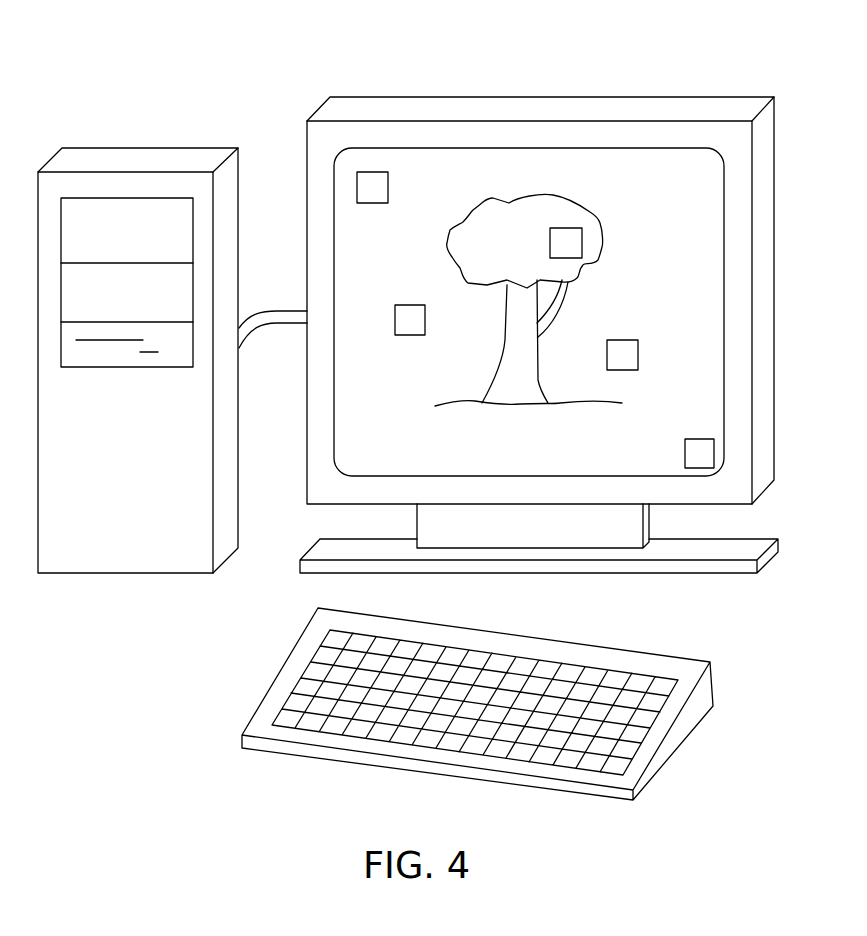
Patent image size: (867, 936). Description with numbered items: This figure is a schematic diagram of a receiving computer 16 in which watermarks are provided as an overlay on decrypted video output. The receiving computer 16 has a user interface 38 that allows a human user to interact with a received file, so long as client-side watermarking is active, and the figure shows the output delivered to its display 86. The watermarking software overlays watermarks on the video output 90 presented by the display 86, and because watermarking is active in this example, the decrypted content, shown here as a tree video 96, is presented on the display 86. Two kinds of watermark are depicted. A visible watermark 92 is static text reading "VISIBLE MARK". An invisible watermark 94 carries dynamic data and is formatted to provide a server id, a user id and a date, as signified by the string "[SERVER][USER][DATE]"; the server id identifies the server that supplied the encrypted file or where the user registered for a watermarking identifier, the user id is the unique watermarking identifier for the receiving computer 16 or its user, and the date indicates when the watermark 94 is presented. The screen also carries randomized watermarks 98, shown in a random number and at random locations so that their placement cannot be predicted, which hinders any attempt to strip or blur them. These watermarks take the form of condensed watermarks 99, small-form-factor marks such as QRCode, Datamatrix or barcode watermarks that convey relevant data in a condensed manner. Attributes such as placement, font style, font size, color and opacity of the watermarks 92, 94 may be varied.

The user interface 38 is at (155, 40).
The receiving computer 16 is at (137, 156).
The display 86 is at (541, 104).
The video output 90 is at (698, 278).
The visible watermark 92 is at (666, 184).
The invisible watermark 94 is at (380, 440).
The tree video 96 is at (490, 198).
The randomized watermarks 98 is at (410, 305).
The condensed watermarks 99 is at (538, 320).